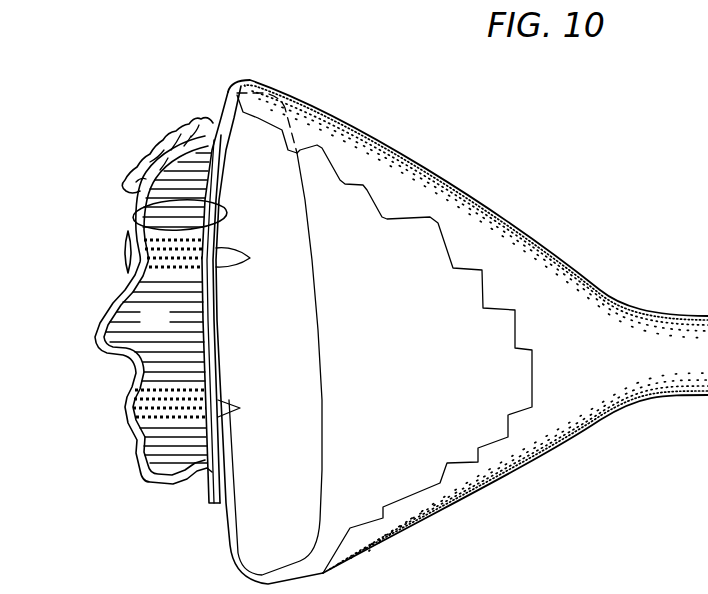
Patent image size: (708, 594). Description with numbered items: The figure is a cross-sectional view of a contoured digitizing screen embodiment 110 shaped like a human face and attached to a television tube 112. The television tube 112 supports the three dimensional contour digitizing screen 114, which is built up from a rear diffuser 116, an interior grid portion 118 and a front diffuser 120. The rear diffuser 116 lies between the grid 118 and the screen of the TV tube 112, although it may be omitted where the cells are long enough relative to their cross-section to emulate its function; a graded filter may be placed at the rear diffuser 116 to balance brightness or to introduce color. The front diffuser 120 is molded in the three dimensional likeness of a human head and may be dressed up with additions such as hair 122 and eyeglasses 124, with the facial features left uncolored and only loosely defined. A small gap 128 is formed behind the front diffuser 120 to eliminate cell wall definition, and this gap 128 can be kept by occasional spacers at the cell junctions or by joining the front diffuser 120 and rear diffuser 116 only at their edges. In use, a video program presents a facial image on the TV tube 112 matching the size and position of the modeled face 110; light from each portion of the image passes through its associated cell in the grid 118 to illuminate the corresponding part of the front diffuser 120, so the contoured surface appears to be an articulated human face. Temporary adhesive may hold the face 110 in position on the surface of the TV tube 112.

The contoured digitizing screen embodiment 110 is at (120, 108).
The television tube 112 is at (380, 153).
The three dimensional contour digitizing screen 114 is at (134, 212).
The rear diffuser 116 is at (202, 347).
The interior grid portion 118 is at (158, 308).
The front diffuser 120 is at (173, 485).
The hair 122 is at (175, 140).
The eyeglasses 124 is at (123, 250).
The small gap 128 is at (137, 415).